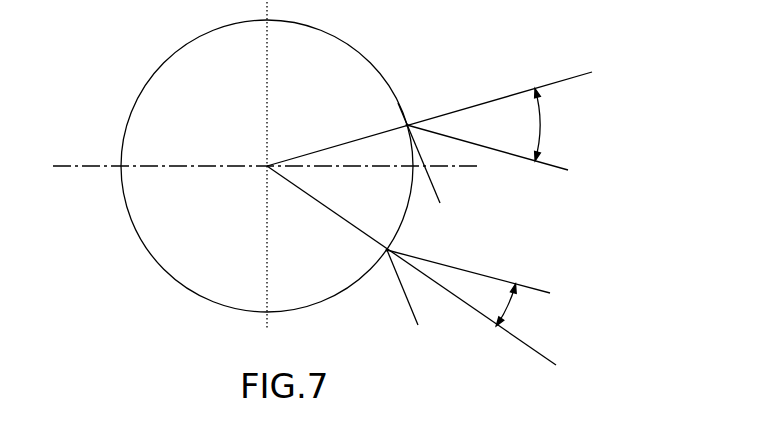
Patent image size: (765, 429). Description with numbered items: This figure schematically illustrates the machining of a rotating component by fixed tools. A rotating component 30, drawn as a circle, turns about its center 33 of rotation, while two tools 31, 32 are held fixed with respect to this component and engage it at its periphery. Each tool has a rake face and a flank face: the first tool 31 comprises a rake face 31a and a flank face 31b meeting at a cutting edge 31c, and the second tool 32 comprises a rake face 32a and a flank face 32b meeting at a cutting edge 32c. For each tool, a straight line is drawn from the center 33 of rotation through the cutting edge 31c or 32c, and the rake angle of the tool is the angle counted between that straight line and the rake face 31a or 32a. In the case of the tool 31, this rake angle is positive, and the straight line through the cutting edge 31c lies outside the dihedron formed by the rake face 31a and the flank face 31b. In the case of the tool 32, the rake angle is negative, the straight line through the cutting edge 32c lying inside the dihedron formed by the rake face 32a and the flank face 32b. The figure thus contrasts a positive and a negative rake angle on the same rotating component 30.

The rotating component 30 is at (212, 234).
The center of rotation 33 is at (265, 164).
The tool 31 is at (582, 187).
The rake face 31a is at (563, 167).
The flank face 31b is at (436, 186).
The cutting edge 31c is at (400, 104).
The tool 32 is at (455, 316).
The rake face 32a is at (535, 289).
The flank face 32b is at (405, 294).
The cutting edge 32c is at (388, 246).